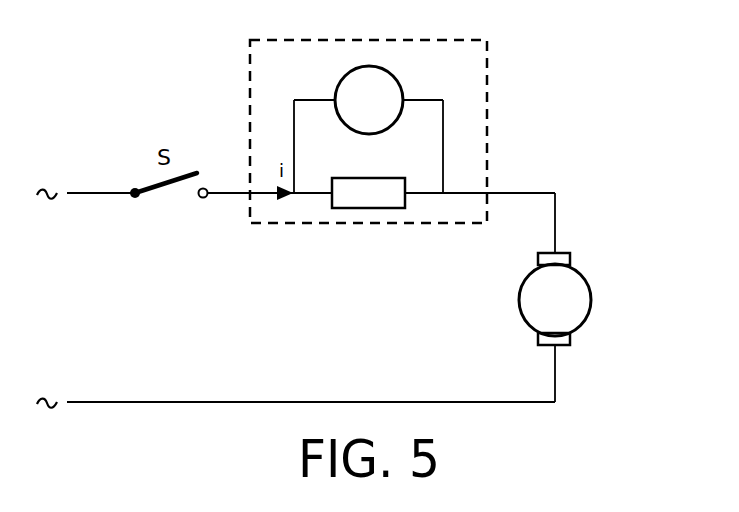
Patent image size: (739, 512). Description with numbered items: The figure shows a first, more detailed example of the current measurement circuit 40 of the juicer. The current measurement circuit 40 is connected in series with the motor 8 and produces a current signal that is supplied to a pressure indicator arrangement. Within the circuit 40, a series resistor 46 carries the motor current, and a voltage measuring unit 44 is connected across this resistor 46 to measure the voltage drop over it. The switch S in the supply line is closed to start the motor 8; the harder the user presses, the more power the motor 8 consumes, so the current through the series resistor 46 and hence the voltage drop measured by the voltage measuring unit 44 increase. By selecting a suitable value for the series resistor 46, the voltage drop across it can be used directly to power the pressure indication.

The current measurement circuit 40 is at (412, 165).
The voltage measuring unit 44 is at (388, 67).
The series resistor 46 is at (359, 208).
The motor 8 is at (591, 300).